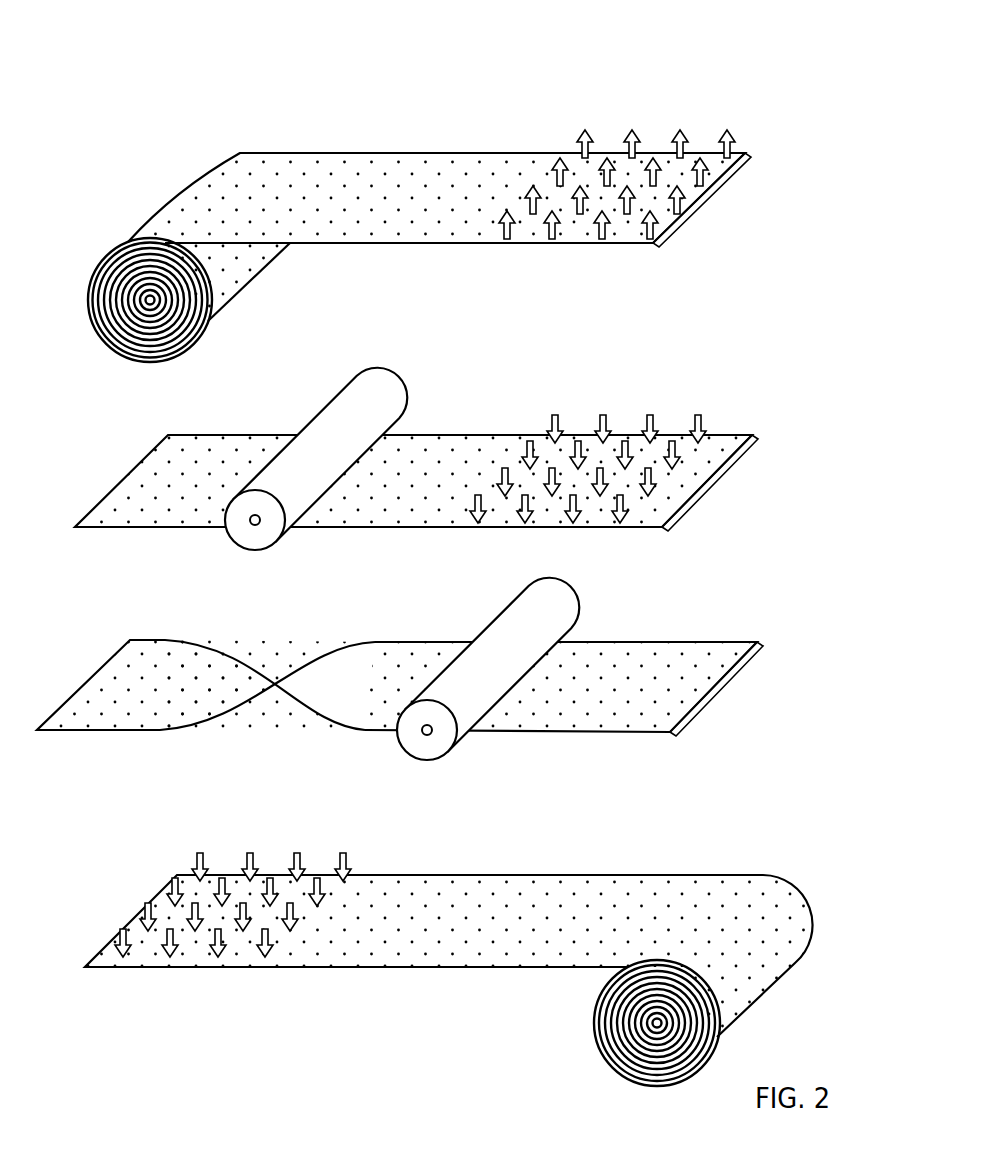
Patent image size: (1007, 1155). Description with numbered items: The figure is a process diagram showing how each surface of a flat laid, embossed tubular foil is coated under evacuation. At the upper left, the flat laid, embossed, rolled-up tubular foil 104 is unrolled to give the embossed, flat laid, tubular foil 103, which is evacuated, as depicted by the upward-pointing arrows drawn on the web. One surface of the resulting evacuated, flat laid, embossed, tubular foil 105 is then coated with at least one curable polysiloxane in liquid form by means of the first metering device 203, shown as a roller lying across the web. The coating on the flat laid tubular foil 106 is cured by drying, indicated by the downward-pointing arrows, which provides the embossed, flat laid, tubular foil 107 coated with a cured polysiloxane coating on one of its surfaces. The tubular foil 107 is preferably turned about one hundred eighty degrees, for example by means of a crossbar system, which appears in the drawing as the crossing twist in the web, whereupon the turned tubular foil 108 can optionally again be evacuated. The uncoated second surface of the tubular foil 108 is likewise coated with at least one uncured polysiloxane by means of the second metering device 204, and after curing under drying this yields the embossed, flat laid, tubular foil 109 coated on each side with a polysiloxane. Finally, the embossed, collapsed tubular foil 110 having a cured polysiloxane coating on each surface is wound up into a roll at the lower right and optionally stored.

The embossed, flat laid, tubular foil 103 is at (345, 163).
The flat laid, embossed, rolled-up tubular foil 104 is at (147, 320).
The evacuated, flat laid, embossed, tubular foil 105 is at (689, 160).
The flat laid tubular foil 106 is at (443, 460).
The embossed, flat laid, tubular foil coated on one surface 107 is at (720, 457).
The turned tubular foil 108 is at (398, 678).
The embossed, flat laid, tubular foil coated on each side 109 is at (693, 668).
The embossed, collapsed tubular foil with cured coating on each surface 110 is at (522, 907).
The first metering device 203 is at (363, 407).
The second metering device 204 is at (528, 637).